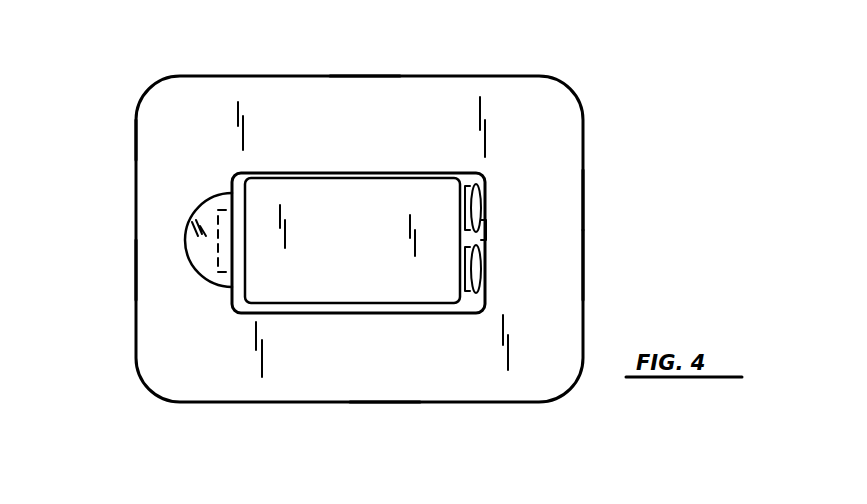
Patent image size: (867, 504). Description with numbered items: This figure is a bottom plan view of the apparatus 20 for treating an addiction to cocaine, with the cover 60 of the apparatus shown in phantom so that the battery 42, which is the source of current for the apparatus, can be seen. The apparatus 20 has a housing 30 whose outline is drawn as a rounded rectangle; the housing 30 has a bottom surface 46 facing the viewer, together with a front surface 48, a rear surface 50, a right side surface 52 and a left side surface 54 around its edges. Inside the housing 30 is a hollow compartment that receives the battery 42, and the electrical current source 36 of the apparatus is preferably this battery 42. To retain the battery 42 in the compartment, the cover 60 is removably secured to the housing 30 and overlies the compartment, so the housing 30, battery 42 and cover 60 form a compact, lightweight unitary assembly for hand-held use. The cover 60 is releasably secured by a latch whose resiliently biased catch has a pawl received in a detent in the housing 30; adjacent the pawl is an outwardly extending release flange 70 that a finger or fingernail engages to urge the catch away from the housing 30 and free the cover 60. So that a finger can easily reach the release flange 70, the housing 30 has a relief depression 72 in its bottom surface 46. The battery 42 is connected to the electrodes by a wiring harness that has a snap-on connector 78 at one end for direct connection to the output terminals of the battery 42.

The apparatus 20 is at (110, 136).
The housing 30 is at (568, 114).
The electrical current source 36 is at (397, 171).
The battery 42 is at (366, 245).
The bottom surface 46 is at (555, 198).
The front surface 48 is at (387, 402).
The rear surface 50 is at (398, 30).
The right side surface 52 is at (597, 263).
The left side surface 54 is at (132, 268).
The cover 60 is at (200, 279).
The release flange 70 is at (196, 218).
The relief depression 72 is at (196, 235).
The snap-on connector 78 is at (484, 258).